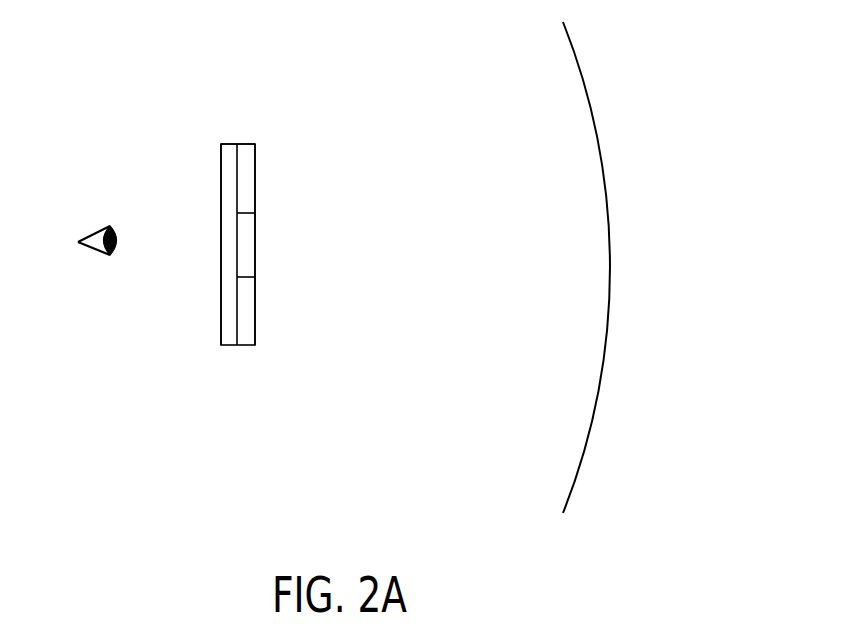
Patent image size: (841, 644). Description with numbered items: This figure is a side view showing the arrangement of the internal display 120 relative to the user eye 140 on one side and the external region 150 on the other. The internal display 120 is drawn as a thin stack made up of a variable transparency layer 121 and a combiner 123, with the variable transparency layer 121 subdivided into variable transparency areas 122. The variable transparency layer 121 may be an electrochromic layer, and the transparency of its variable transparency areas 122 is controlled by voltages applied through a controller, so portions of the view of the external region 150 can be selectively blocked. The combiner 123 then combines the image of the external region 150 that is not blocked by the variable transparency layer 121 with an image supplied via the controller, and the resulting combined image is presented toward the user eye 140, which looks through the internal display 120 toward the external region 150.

The internal display 120 is at (255, 353).
The variable transparency layer 121 is at (246, 144).
The variable transparency areas 122 is at (250, 178).
The combiner 123 is at (229, 163).
The user eye 140 is at (88, 247).
The external region 150 is at (608, 325).